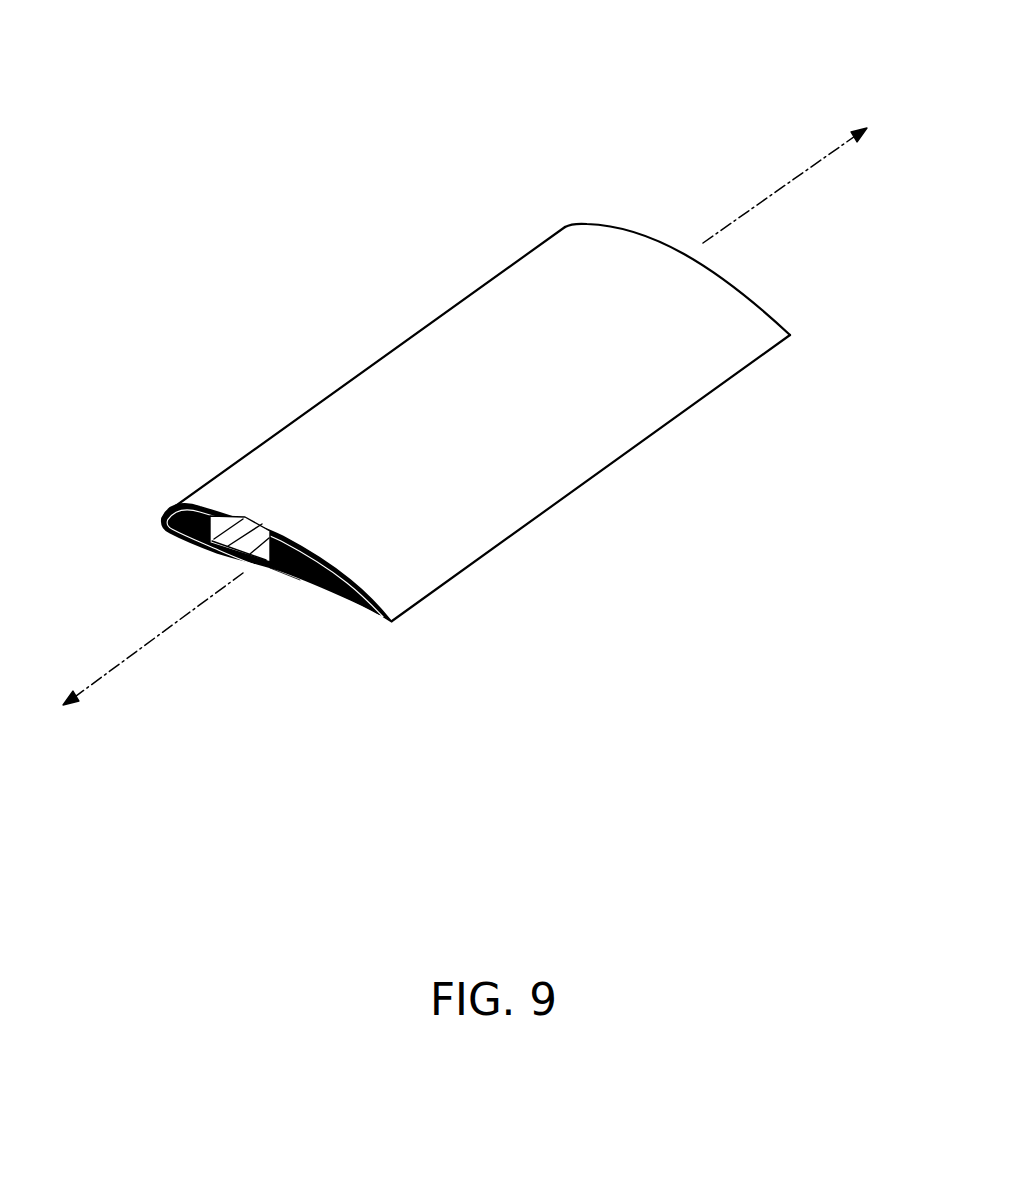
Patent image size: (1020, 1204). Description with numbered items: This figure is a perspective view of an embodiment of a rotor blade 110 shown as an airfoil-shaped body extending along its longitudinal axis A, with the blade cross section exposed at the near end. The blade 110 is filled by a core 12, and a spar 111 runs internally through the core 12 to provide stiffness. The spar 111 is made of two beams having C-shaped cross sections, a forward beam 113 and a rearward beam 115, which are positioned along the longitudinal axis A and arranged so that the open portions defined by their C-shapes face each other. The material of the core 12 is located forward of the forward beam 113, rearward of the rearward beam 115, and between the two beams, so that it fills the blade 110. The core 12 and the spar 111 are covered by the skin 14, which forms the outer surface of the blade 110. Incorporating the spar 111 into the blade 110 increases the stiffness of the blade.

The blade 110 is at (610, 116).
The core 12 is at (298, 574).
The skin 14 is at (723, 328).
The spar 111 is at (228, 555).
The forward beam 113 is at (189, 512).
The rearward beam 115 is at (284, 573).
The longitudinal axis A is at (816, 163).